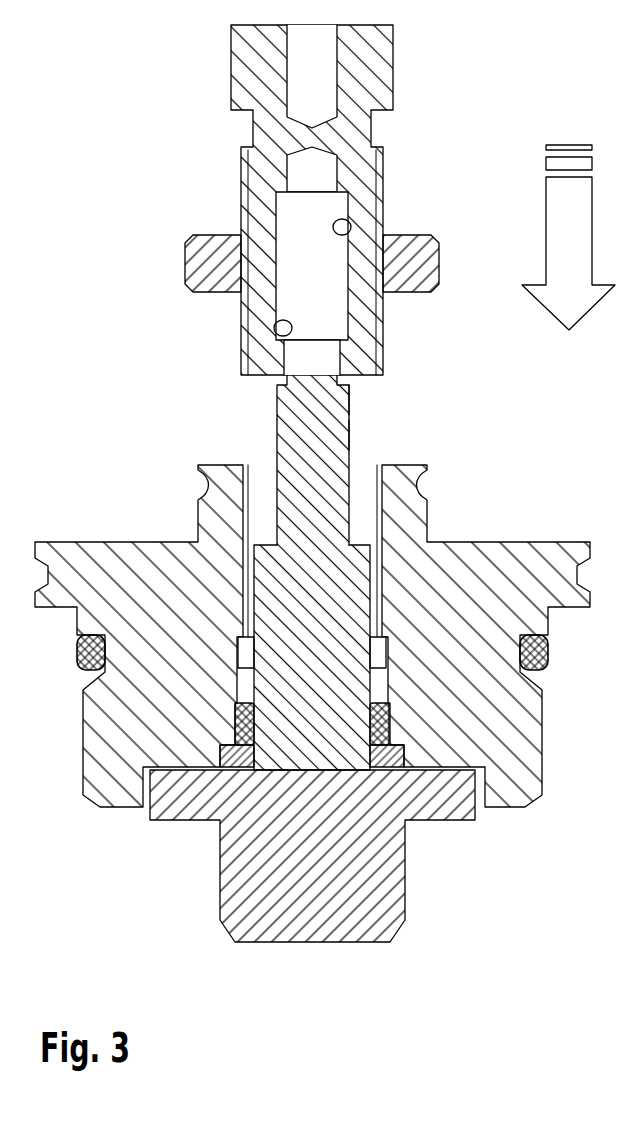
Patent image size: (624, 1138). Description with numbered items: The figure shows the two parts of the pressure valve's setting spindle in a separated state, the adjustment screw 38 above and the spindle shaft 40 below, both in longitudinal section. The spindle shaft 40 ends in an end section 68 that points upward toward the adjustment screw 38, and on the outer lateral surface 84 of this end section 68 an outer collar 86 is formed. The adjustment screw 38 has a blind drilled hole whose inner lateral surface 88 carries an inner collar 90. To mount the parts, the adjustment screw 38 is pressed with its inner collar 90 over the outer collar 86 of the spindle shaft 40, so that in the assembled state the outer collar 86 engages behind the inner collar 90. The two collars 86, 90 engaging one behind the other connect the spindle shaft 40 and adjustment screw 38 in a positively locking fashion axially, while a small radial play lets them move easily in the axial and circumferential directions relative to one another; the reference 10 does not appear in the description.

The valve housing 10 is at (312, 636).
The adjustment screw 38 is at (372, 70).
The spindle shaft 40 is at (330, 645).
The end section 68 is at (308, 458).
The outer lateral surface 84 is at (350, 434).
The outer collar 86 is at (350, 402).
The inner lateral surface 88 is at (350, 219).
The inner collar 90 is at (275, 326).